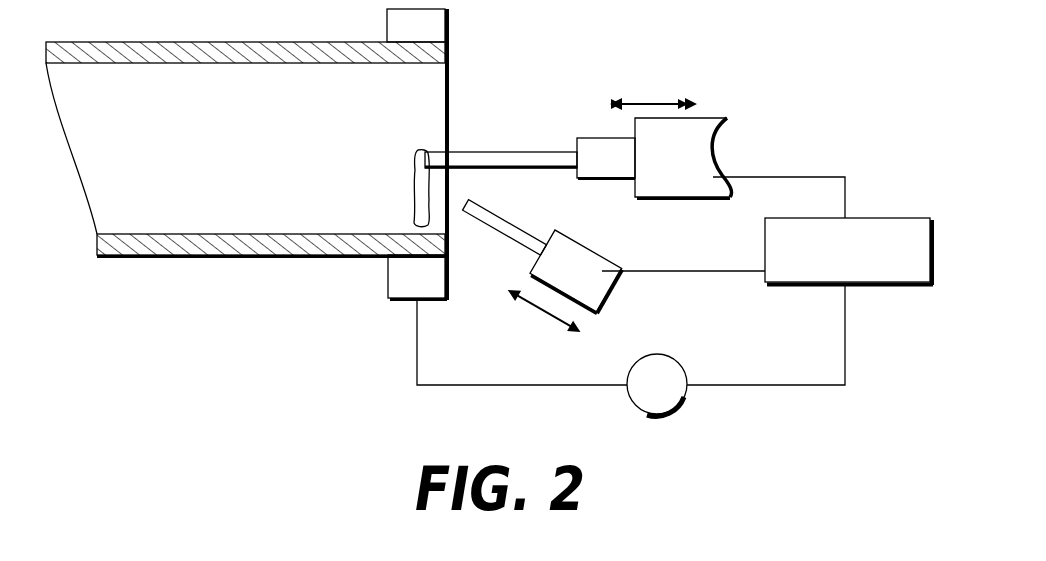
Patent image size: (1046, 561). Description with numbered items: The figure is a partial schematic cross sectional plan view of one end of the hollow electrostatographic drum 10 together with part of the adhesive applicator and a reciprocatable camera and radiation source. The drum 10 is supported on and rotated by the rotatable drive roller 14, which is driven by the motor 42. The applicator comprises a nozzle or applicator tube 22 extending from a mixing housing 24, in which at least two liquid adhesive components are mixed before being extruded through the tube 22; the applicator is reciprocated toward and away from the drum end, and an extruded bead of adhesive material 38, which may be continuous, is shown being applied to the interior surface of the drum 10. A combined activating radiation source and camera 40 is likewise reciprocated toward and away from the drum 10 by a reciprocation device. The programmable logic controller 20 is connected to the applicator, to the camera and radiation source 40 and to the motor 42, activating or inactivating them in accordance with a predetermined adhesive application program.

The hollow electrostatographic drum 10 is at (170, 41).
The rotatable drive roller 14 is at (388, 279).
The programmable logic controller 20 is at (866, 218).
The applicator tube 22 is at (468, 152).
The mixing housing 24 is at (708, 118).
The extruded bead of adhesive material 38 is at (418, 182).
The combined activating radiation source and camera 40 is at (584, 236).
The motor 42 is at (668, 355).